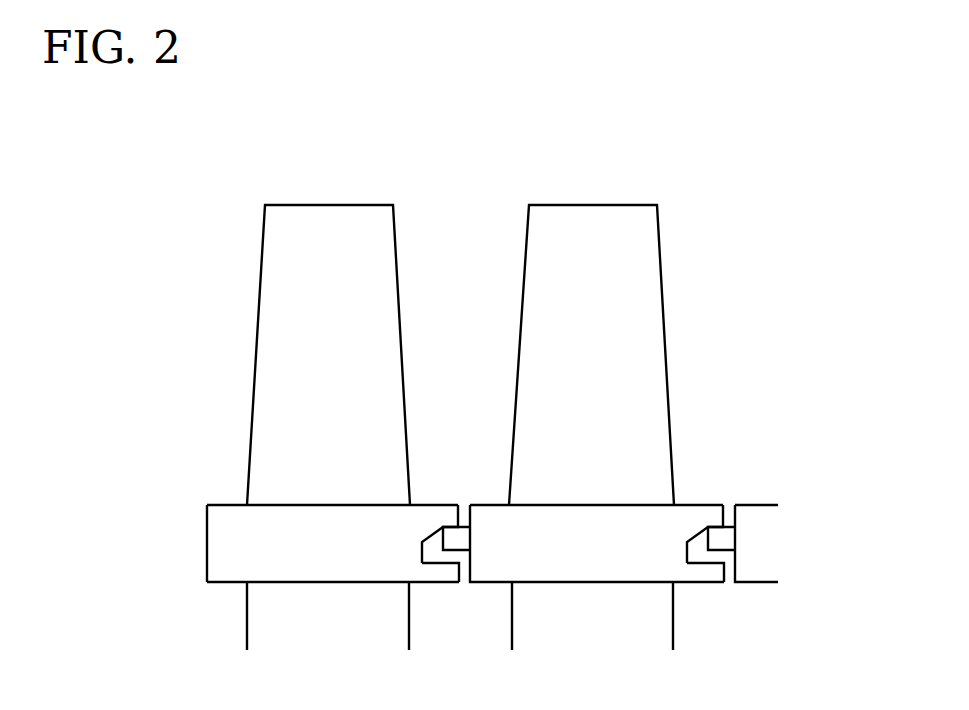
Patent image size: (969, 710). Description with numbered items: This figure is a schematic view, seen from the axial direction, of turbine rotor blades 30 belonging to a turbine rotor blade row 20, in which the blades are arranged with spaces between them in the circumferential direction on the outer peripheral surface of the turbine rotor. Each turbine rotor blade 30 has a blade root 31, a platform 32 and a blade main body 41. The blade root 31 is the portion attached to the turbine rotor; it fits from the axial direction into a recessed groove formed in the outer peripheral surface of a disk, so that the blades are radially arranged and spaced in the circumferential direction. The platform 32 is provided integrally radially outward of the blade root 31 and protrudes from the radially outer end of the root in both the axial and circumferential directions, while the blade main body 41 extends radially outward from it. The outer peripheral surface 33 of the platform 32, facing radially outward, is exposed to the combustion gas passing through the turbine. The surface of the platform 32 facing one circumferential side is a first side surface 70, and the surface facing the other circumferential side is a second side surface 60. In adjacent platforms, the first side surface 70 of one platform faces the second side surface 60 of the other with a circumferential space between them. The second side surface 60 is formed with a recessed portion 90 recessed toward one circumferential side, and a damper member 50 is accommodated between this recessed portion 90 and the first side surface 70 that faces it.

The turbine rotor blade row 20 is at (193, 190).
The turbine rotor blade 30 is at (249, 331).
The blade root 31 is at (256, 632).
The platform 32 is at (362, 516).
The outer peripheral surface 33 is at (288, 505).
The blade main body 41 is at (264, 386).
The damper member 50 is at (458, 520).
The second side surface 60 is at (462, 576).
The first side surface 70 is at (207, 540).
The recessed portion 90 is at (437, 553).